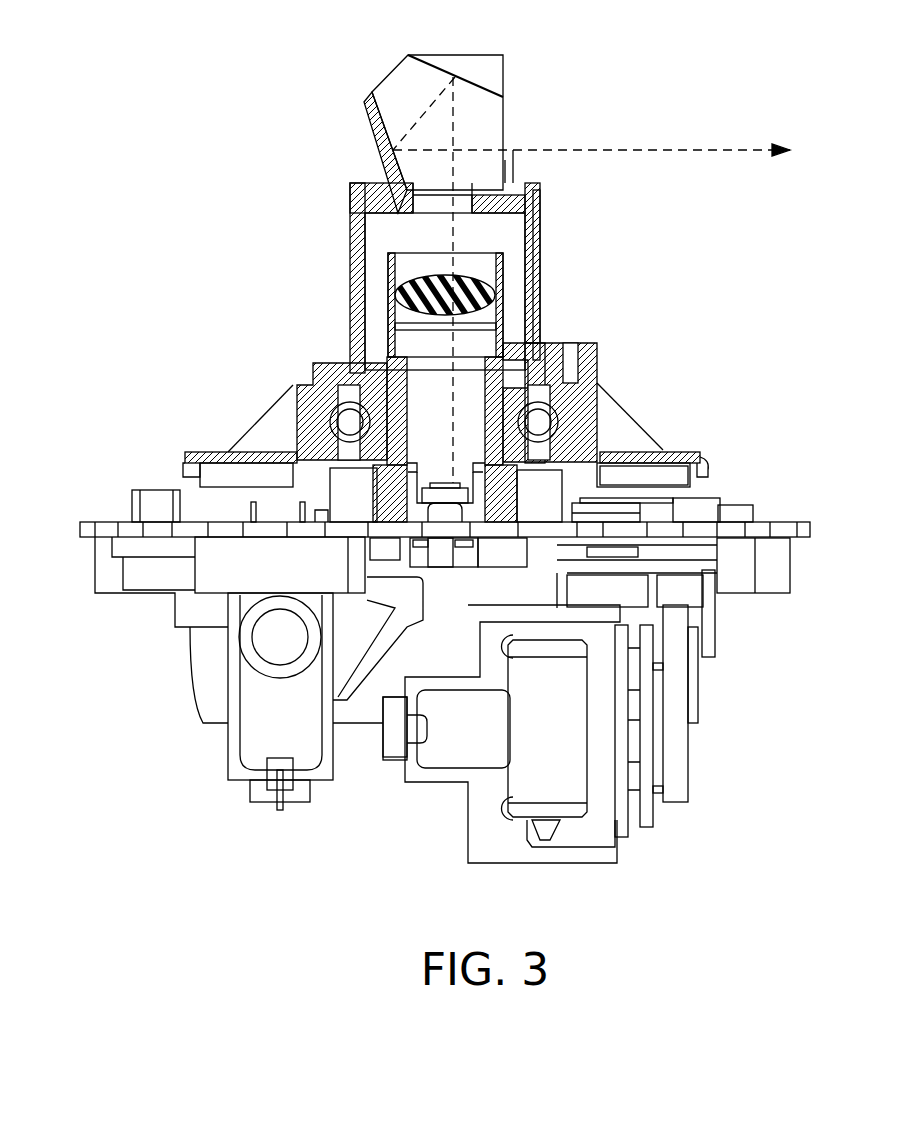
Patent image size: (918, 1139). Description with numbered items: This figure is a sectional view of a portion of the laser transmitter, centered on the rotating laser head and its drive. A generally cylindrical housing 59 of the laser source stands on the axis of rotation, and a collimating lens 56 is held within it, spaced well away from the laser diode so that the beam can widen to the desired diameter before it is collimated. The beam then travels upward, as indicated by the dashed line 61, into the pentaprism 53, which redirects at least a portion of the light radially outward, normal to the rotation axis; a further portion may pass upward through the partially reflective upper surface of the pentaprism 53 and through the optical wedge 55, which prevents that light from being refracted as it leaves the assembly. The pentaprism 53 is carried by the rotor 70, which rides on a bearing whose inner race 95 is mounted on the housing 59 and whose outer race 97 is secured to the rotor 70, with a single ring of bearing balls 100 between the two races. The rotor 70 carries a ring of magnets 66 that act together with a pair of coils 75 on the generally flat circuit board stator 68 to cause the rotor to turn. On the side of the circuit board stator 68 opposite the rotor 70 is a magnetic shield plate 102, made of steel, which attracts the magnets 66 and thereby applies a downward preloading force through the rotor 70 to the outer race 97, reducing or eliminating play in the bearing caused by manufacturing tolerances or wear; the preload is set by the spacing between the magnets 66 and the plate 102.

The pentaprism 53 is at (493, 125).
The optical wedge 55 is at (463, 62).
The dashed line (laser beam path) 61 is at (423, 107).
The collimating lens 56 is at (453, 277).
The generally cylindrical housing 59 is at (393, 367).
The inner race 95 is at (337, 373).
The outer race 97 is at (337, 388).
The bearing balls 100 is at (343, 425).
The rotor 70 is at (620, 457).
The magnets 66 is at (208, 475).
The coils 75 is at (703, 508).
The circuit board stator 68 is at (778, 528).
The magnetic shield plate 102 is at (682, 563).